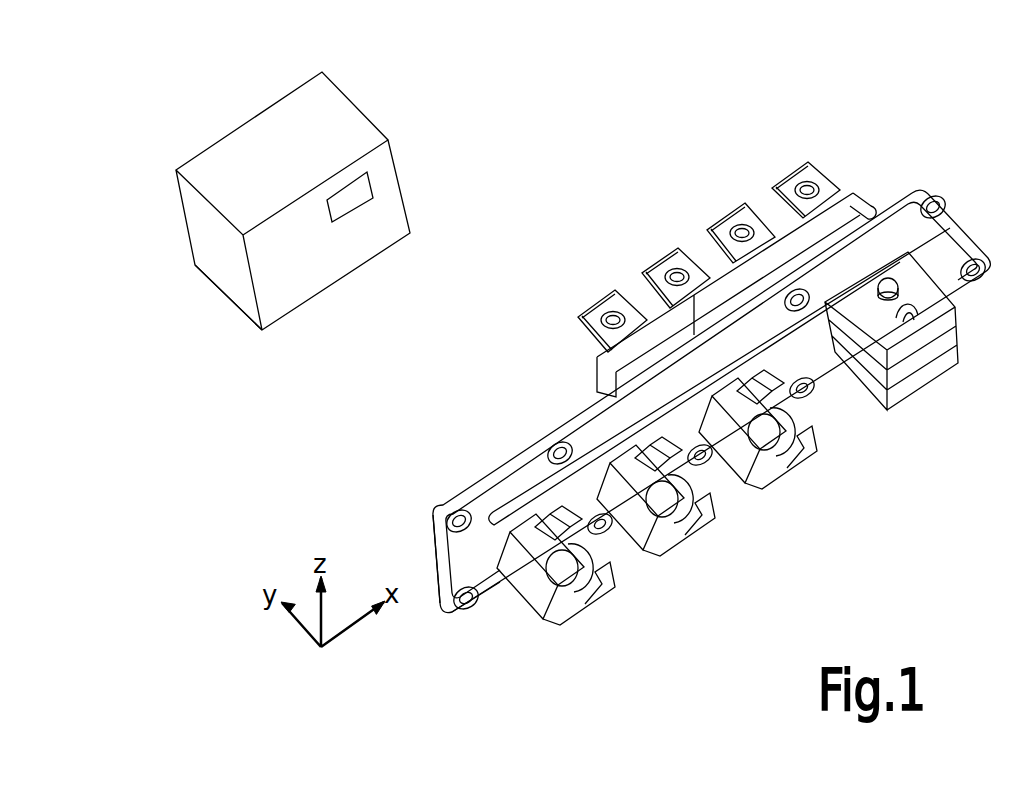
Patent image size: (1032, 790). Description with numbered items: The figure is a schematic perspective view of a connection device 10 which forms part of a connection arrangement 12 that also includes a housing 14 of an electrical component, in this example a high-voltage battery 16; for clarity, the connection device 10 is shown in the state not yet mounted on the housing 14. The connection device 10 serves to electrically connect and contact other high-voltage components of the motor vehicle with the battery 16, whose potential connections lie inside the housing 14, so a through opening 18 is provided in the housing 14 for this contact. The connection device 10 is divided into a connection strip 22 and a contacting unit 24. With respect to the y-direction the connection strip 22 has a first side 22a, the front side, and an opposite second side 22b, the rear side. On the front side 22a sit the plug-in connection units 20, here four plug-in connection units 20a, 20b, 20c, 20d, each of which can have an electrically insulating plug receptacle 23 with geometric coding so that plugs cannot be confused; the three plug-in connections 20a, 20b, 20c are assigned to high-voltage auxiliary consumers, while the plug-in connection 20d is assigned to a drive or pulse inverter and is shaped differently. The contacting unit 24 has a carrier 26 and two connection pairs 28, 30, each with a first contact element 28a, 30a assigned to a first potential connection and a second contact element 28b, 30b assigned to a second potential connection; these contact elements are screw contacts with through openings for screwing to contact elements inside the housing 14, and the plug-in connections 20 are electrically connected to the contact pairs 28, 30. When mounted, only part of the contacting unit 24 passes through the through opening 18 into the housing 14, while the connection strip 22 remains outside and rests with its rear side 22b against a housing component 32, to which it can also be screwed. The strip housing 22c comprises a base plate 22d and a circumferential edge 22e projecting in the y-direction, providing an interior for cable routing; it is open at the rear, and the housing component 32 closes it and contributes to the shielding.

The connection device 10 is at (965, 102).
The connection arrangement 12 is at (562, 95).
The housing 14 is at (317, 214).
The high-voltage battery 16 is at (357, 108).
The through opening 18 is at (355, 192).
The plug-in connection units 20 is at (729, 472).
The plug-in connection unit 20a is at (577, 620).
The plug-in connection unit 20b is at (680, 557).
The plug-in connection unit 20c is at (783, 490).
The plug-in connection unit 20d is at (893, 400).
The connection strip 22 is at (432, 508).
The first side 22a is at (458, 573).
The second side 22b is at (490, 470).
The strip housing 22c is at (925, 185).
The base plate 22d is at (483, 500).
The circumferential edge 22e is at (437, 560).
The plug receptacle 23 is at (525, 580).
The contacting unit 24 is at (596, 368).
The carrier 26 is at (853, 200).
The connection pair 28 is at (627, 190).
The first contact element 28a is at (578, 310).
The second contact element 28b is at (643, 263).
The connection pair 30 is at (762, 108).
The first contact element 30a is at (722, 212).
The second contact element 30b is at (790, 173).
The housing component 32 is at (310, 273).